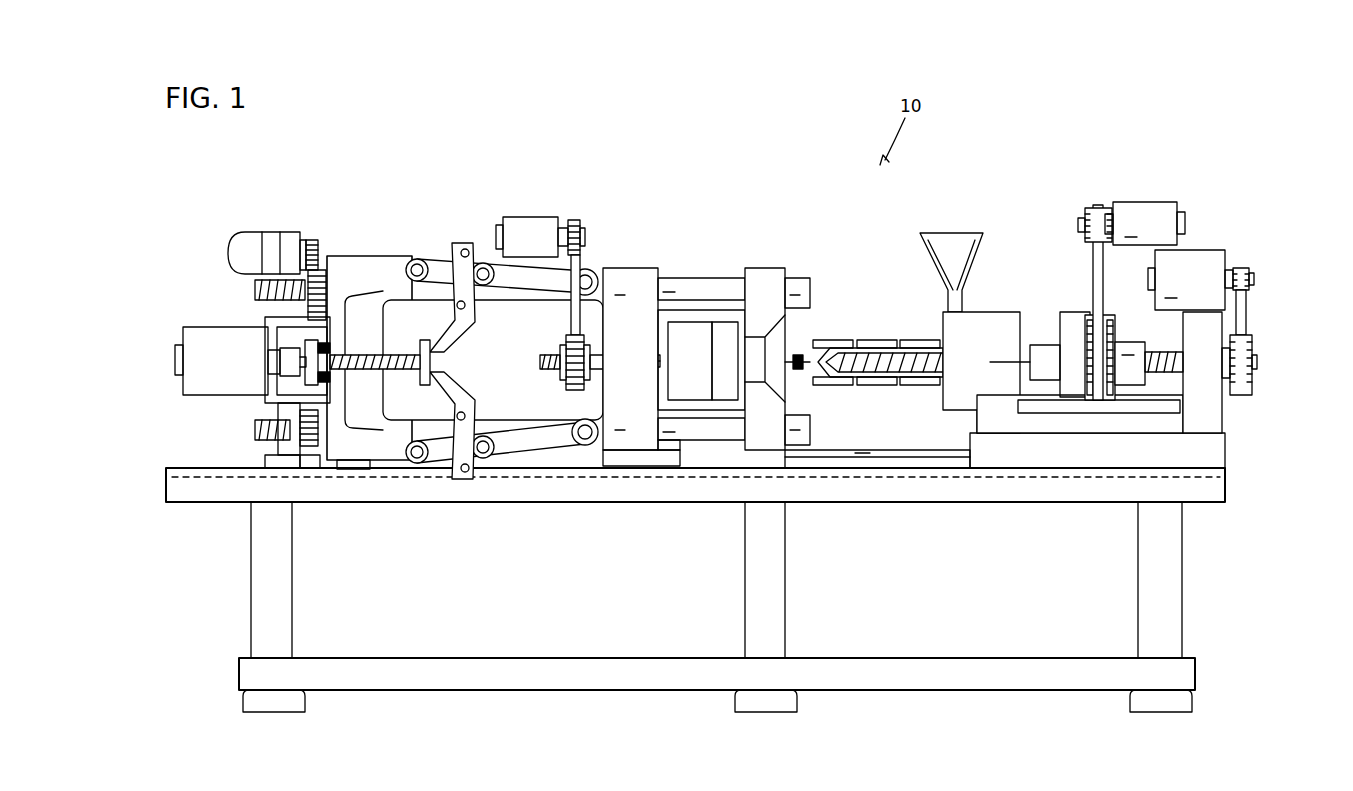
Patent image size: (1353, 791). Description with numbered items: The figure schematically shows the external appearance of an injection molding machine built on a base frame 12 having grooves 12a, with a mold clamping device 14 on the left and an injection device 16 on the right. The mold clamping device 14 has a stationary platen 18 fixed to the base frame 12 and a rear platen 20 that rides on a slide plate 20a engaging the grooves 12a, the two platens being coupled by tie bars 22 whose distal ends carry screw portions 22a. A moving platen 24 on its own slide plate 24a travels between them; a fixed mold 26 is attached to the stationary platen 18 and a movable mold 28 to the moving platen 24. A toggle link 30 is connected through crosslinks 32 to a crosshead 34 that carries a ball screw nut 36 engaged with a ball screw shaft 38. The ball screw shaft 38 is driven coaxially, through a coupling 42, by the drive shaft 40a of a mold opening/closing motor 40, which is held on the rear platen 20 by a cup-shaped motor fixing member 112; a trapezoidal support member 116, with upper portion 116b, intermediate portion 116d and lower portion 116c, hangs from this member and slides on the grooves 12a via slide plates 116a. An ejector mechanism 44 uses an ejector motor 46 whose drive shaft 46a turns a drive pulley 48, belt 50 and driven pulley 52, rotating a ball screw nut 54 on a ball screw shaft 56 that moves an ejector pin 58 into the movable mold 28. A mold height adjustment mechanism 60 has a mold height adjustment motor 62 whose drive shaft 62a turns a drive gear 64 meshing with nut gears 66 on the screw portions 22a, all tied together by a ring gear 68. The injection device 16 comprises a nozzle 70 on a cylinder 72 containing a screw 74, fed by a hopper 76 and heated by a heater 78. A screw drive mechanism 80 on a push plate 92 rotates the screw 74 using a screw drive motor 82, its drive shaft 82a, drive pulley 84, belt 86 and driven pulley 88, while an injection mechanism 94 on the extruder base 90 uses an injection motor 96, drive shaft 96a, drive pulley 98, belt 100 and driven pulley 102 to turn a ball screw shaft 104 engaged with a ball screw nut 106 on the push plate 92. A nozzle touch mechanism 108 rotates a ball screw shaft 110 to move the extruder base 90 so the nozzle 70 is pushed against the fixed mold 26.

The base frame 12 is at (176, 486).
The grooves 12a is at (170, 468).
The mold clamping device 14 is at (660, 200).
The injection device 16 is at (1250, 218).
The stationary platen 18 is at (762, 280).
The rear platen 20 is at (338, 262).
The slide plate 20a is at (360, 470).
The tie bars 22 is at (705, 290).
The screw portion 22a is at (255, 292).
The moving platen 24 is at (618, 268).
The slide plate 24a is at (642, 466).
The fixed mold 26 is at (722, 330).
The movable mold 28 is at (683, 330).
The toggle link 30 is at (532, 450).
The crosslinks 32 is at (455, 450).
The crosshead 34 is at (455, 384).
The ball screw nut 36 is at (425, 388).
The ball screw shaft 38 is at (385, 355).
The mold opening/closing motor 40 is at (183, 338).
The drive shaft 40a is at (268, 368).
The coupling 42 is at (280, 355).
The ejector mechanism 44 is at (568, 172).
The ejector motor 46 is at (503, 232).
The drive shaft 46a is at (560, 235).
The drive pulley 48 is at (580, 225).
The belt 50 is at (571, 322).
The driven pulley 52 is at (562, 380).
The ball screw nut 54 is at (592, 375).
The ball screw shaft 56 is at (545, 362).
The ejector pin 58 is at (610, 355).
The mold height adjustment mechanism 60 is at (205, 180).
The mold height adjustment motor 62 is at (262, 240).
The drive shaft 62a is at (300, 252).
The drive gear 64 is at (313, 240).
The nut gears 66 is at (326, 290).
The ring gear 68 is at (335, 300).
The nozzle 70 is at (798, 370).
The cylinder 72 is at (844, 380).
The screw 74 is at (885, 378).
The hopper 76 is at (953, 235).
The heater 78 is at (918, 385).
The screw drive mechanism 80 is at (1145, 195).
The screw drive motor 82 is at (1162, 212).
The drive shaft 82a is at (1113, 222).
The drive pulley 84 is at (1085, 212).
The belt 86 is at (1093, 272).
The driven pulley 88 is at (1070, 325).
The extruder base 90 is at (1055, 450).
The push plate 92 is at (1115, 318).
The injection mechanism 94 is at (1262, 276).
The injection motor 96 is at (1190, 258).
The drive shaft 96a is at (1228, 275).
The drive pulley 98 is at (1250, 272).
The belt 100 is at (1243, 310).
The driven pulley 102 is at (1258, 348).
The ball screw shaft 104 is at (1170, 352).
The ball screw nut 106 is at (1138, 380).
The nozzle touch mechanism 108 is at (1230, 408).
The ball screw shaft 110 is at (925, 455).
The motor fixing member 112 is at (268, 322).
The support member 116 is at (255, 458).
The slide plates 116a is at (300, 465).
The upper portion 116b is at (280, 420).
The lower portion 116c is at (278, 460).
The intermediate portion 116d is at (288, 440).